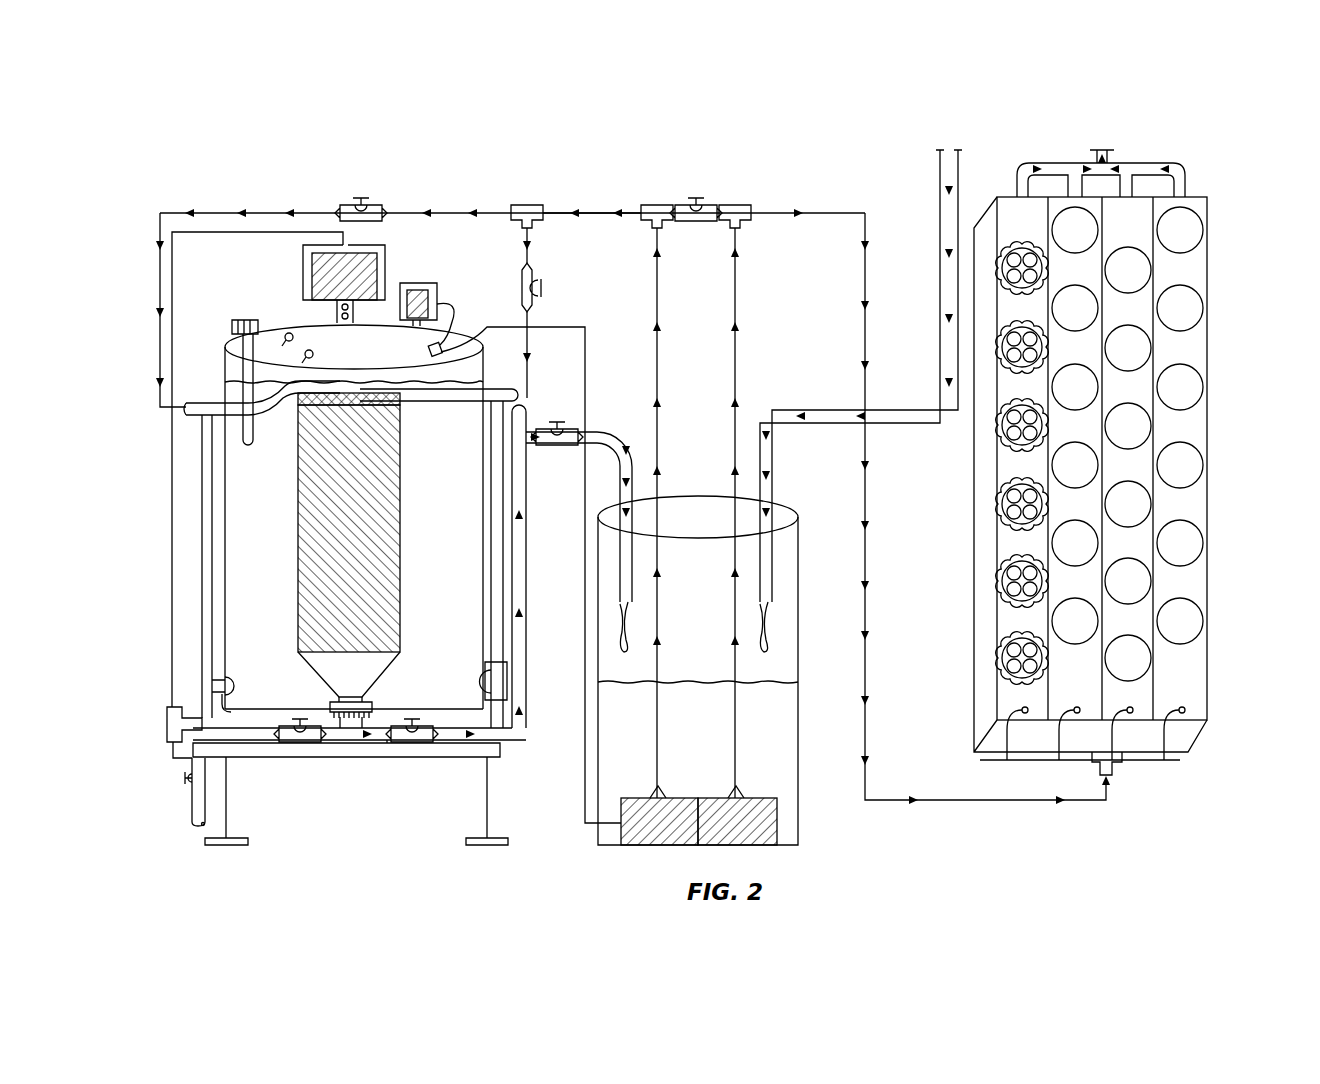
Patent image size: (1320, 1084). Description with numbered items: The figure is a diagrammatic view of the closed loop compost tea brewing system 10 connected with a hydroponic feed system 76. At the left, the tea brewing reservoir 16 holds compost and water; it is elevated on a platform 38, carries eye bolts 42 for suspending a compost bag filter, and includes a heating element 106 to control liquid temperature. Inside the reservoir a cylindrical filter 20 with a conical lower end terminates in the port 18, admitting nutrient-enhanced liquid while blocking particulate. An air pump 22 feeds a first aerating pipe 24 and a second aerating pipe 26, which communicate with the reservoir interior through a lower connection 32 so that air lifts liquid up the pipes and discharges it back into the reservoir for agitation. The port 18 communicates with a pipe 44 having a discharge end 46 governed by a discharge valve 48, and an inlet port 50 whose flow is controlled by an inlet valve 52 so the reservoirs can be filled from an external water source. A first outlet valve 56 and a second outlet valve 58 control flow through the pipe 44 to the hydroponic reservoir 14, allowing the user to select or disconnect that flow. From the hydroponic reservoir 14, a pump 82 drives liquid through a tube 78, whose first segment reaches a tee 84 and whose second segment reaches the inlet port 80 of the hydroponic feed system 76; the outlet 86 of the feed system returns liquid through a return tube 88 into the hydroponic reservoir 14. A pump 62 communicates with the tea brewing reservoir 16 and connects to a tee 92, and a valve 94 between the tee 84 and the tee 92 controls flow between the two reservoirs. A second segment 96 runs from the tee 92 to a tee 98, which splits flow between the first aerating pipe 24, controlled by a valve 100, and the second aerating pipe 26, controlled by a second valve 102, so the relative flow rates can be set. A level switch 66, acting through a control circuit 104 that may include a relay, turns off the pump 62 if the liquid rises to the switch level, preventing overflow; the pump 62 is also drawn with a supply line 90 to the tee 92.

The closed loop compost tea brewing system 10 is at (426, 156).
The hydroponic reservoir 14 is at (800, 602).
The tea brewing reservoir 16 is at (228, 372).
The port 18 is at (326, 692).
The filter 20 is at (298, 512).
The air pump 22 is at (376, 246).
The first aerating pipe 24 is at (202, 508).
The second aerating pipe 26 is at (491, 627).
The lower connection 32 is at (226, 712).
The platform 38 is at (228, 792).
The eye bolts 42 is at (305, 354).
The pipe 44 is at (350, 743).
The discharge end 46 is at (195, 815).
The discharge valve 48 is at (188, 773).
The inlet port 50 is at (200, 724).
The inlet valve 52 is at (300, 743).
The first outlet valve 56 is at (412, 743).
The second outlet valve 58 is at (557, 448).
The pump 62 is at (638, 797).
The level switch 66 is at (445, 346).
The hydroponic feed system 76 is at (1220, 296).
The tube 78 is at (737, 366).
The inlet port 80 is at (1115, 765).
The pump 82 is at (760, 797).
The tee 84 is at (737, 206).
The outlet 86 is at (1101, 150).
The return tube 88 is at (946, 150).
The supply line 90 is at (655, 366).
The tee 92 is at (651, 206).
The valve 94 is at (694, 222).
The second segment 96 is at (596, 216).
The tee 98 is at (532, 206).
The valve 100 is at (375, 207).
The second valve 102 is at (520, 288).
The control circuit 104 is at (423, 284).
The heating element 106 is at (243, 320).